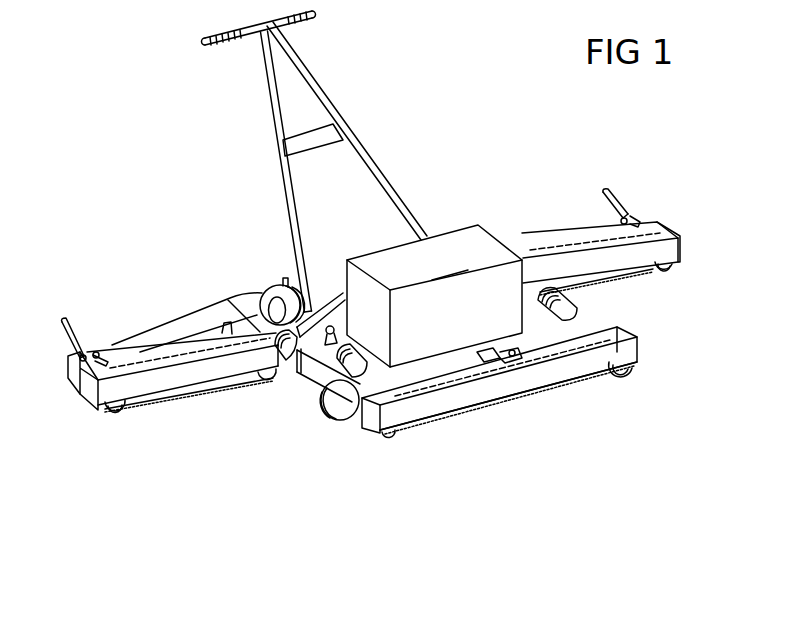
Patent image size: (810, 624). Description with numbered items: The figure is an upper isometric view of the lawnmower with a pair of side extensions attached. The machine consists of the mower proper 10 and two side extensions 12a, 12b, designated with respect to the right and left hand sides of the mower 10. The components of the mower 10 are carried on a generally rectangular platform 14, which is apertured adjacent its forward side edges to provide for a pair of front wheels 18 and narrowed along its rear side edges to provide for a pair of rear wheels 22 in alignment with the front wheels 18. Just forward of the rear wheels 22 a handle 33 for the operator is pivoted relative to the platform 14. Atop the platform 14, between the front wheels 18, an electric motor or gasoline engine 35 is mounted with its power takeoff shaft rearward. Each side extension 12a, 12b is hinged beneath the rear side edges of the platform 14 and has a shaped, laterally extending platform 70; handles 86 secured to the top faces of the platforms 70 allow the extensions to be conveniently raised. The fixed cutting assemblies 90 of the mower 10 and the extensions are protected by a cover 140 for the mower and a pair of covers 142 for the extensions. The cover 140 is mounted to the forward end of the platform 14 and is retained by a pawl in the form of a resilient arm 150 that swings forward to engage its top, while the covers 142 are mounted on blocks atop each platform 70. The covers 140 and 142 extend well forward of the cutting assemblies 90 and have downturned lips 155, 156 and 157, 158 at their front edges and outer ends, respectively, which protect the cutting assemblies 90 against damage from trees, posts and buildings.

The mower proper 10 is at (503, 410).
The side extension 12a is at (686, 282).
The side extension 12b is at (118, 416).
The platform 14 is at (334, 299).
The front wheels 18 is at (338, 410).
The rear wheels 22 is at (278, 287).
The handle 33 is at (372, 166).
The electric motor or gasoline engine 35 is at (437, 320).
The platforms 70 is at (210, 310).
The handles 86 is at (67, 323).
The fixed cutting assemblies 90 is at (545, 390).
The cover 140 is at (618, 331).
The covers 142 is at (205, 348).
The resilient arm 150 is at (484, 350).
The downturned lip 155 is at (448, 400).
The downturned end lip 156 is at (371, 430).
The downturned lip 157 is at (178, 380).
The downturned end lip 158 is at (78, 395).